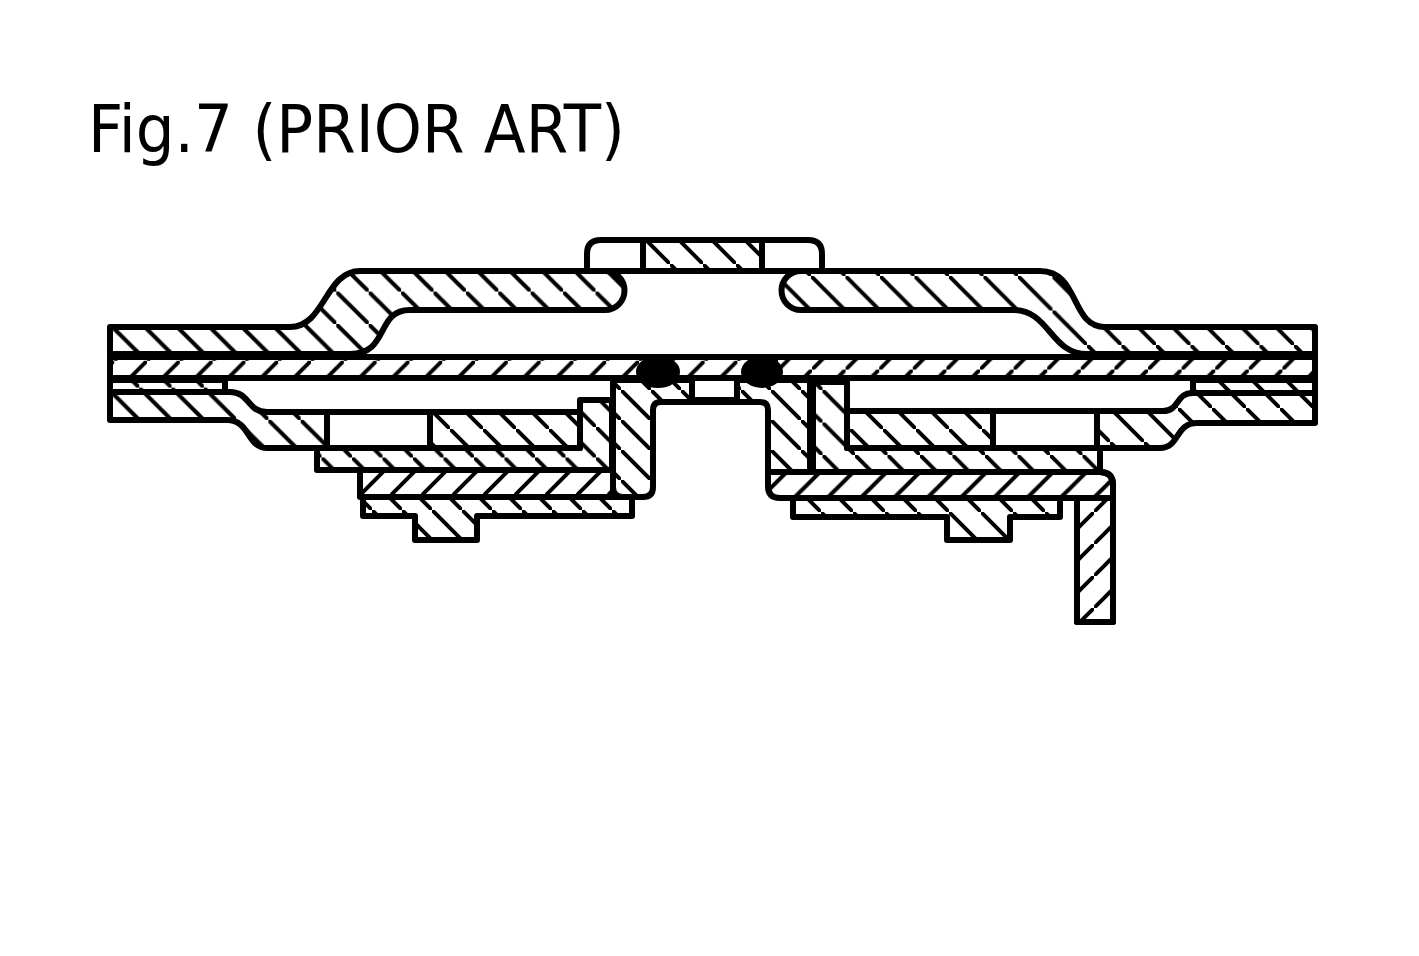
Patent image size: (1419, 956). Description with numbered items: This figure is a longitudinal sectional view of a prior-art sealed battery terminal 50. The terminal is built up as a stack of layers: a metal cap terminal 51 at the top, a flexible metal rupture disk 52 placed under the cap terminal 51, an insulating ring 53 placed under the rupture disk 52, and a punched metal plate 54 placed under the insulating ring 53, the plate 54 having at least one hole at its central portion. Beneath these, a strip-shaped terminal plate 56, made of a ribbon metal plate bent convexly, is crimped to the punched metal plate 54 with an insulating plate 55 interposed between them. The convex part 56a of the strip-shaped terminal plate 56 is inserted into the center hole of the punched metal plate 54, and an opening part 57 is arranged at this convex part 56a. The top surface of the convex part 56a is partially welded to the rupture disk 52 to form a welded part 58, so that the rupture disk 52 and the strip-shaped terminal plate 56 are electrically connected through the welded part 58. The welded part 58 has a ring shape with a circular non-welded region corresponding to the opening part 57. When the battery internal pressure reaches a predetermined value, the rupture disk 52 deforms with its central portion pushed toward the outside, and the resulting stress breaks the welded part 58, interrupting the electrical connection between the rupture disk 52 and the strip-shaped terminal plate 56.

The sealed battery terminal 50 is at (150, 239).
The cap terminal 51 is at (1100, 338).
The rupture disk 52 is at (975, 360).
The insulating ring 53 is at (1312, 388).
The punched metal plate 54 is at (1155, 433).
The insulating plate 55 is at (330, 460).
The strip-shaped terminal plate 56 is at (1080, 573).
The convex part 56a is at (750, 403).
The opening part 57 is at (712, 388).
The welded part 58 is at (636, 372).